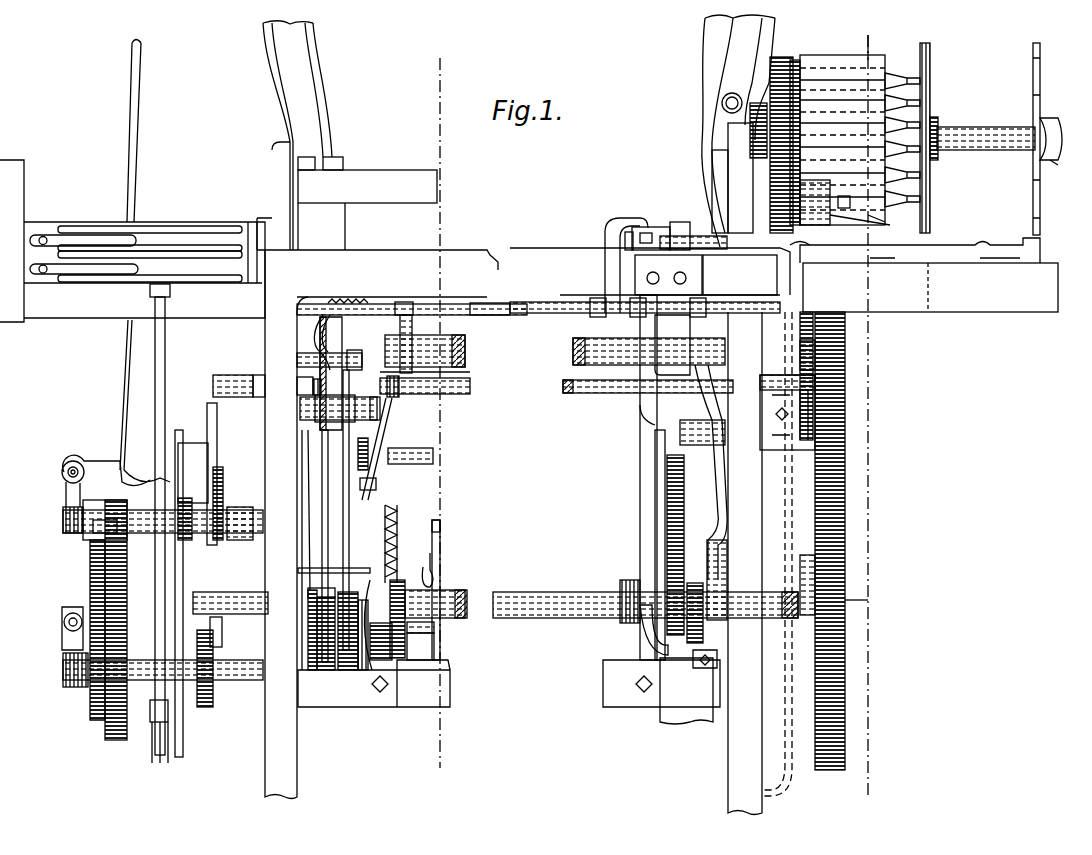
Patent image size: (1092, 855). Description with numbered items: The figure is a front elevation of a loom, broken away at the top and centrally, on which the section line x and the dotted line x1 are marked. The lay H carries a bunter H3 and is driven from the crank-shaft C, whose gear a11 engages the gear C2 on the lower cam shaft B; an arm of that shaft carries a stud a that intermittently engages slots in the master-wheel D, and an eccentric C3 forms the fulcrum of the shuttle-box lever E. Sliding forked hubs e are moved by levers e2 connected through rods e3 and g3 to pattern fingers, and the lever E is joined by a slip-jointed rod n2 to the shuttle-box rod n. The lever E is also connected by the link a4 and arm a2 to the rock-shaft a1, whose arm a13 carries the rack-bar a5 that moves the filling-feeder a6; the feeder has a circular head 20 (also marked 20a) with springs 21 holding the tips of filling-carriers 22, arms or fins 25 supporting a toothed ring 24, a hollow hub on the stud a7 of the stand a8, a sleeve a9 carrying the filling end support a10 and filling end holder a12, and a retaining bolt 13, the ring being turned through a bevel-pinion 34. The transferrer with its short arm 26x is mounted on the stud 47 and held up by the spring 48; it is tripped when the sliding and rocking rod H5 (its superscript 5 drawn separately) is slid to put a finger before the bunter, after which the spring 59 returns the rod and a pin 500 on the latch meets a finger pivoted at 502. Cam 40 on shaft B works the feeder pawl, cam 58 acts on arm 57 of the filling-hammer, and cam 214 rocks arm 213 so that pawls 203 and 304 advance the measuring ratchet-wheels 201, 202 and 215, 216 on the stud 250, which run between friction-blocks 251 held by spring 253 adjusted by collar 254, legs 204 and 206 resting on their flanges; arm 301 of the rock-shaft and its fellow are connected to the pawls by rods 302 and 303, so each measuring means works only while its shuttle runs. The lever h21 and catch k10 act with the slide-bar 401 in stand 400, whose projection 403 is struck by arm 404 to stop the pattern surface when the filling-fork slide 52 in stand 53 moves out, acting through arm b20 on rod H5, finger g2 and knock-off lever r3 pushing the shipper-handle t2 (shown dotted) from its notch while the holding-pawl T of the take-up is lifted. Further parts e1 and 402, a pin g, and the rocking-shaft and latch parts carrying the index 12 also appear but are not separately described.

The section axis x is at (648, 415).
The section axis x1 is at (864, 413).
The frame H is at (382, 175).
The rod n is at (165, 372).
The rod n2 is at (185, 728).
The lever arm e3 is at (122, 433).
The link g3 is at (147, 448).
The lever e2 is at (85, 465).
The gear e1 is at (92, 540).
The shaft e is at (92, 688).
The gear wheel D is at (105, 730).
The shaft B is at (207, 432).
The shaft C is at (108, 512).
The pinion C3 is at (246, 517).
The pinion a4 is at (223, 470).
The collar E is at (222, 488).
The shaft a1 is at (225, 590).
The shaft a2 is at (213, 386).
The shaft a is at (705, 400).
The shaft 12 is at (282, 455).
The spring 59 is at (370, 300).
The lever g is at (326, 324).
The collar 404 is at (412, 333).
The shaft 403 is at (458, 370).
The collar 500 is at (400, 386).
The sleeve 502 is at (382, 412).
The block 301 is at (297, 390).
The rod k10 is at (375, 445).
The shaft 302 is at (433, 458).
The collar 402 is at (376, 486).
The rod 400 is at (322, 480).
The rod 401 is at (343, 500).
The rod 303 is at (305, 520).
The bar 206 is at (320, 568).
The gear 304 is at (308, 596).
The gear 202 is at (352, 670).
The collar 215 is at (330, 672).
The pinion 216 is at (312, 672).
The bearing 201 is at (372, 672).
The bracket 251 is at (395, 680).
The pinion 253 is at (395, 645).
The collar 250 is at (435, 626).
The collar 254 is at (435, 640).
The sleeve 203 is at (395, 580).
The spring 204 is at (390, 520).
The rod 213 is at (437, 522).
The collar 214 is at (440, 540).
The hook h21 is at (437, 575).
The rod 5 is at (510, 312).
The rail H5 is at (565, 315).
The bar 57 is at (640, 478).
The bracket 20 is at (675, 345).
The lever T is at (722, 495).
The gear 58 is at (640, 638).
The gear wheel t2 is at (818, 490).
The pinion C2 is at (845, 553).
The gear 40 is at (845, 600).
The pinion a11 is at (845, 340).
The clutch a13 is at (840, 395).
The gear a5 is at (800, 330).
The strap b20 is at (605, 242).
The block 52 is at (650, 228).
The block 53 is at (632, 246).
The block g2 is at (680, 232).
The rod r3 is at (683, 250).
The bracket arm 34 is at (760, 95).
The block 48 is at (740, 195).
The pinion a7 is at (750, 130).
The gear a8 is at (730, 152).
The drum 22 is at (832, 80).
The disc 24 is at (798, 60).
The cones 25 is at (862, 75).
The plate 20a is at (925, 48).
The plate a6 is at (942, 127).
The hub 21 is at (930, 70).
The shaft a9 is at (962, 127).
The disc a10 is at (1033, 80).
The knob a12 is at (1050, 118).
The pin 13 is at (1058, 158).
The pin 47 is at (850, 208).
The pin 26x is at (870, 230).
The frame lug H3 is at (808, 242).